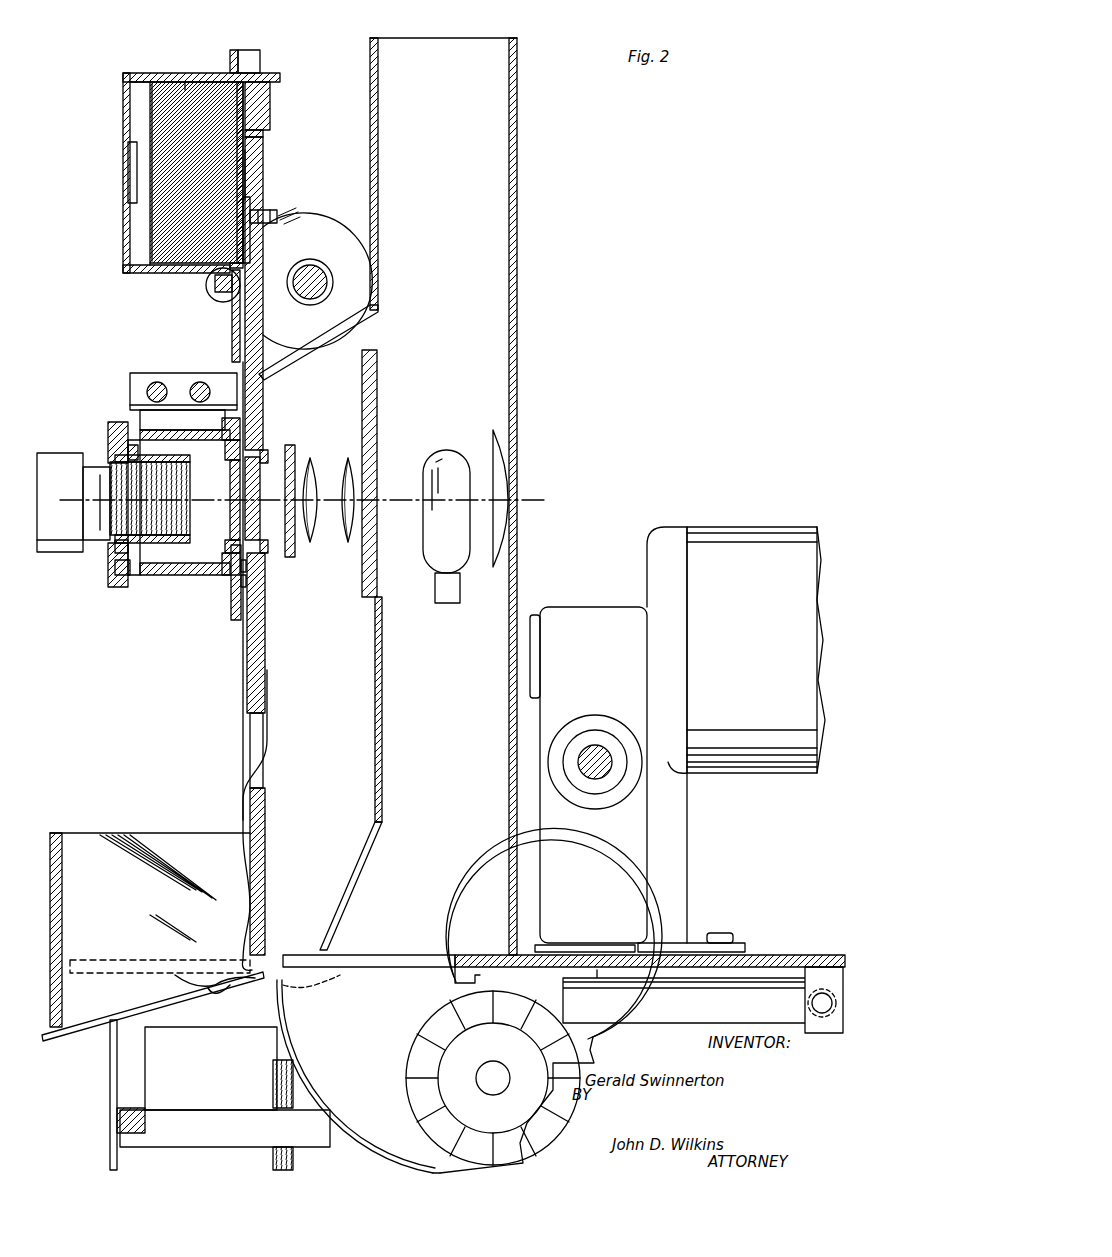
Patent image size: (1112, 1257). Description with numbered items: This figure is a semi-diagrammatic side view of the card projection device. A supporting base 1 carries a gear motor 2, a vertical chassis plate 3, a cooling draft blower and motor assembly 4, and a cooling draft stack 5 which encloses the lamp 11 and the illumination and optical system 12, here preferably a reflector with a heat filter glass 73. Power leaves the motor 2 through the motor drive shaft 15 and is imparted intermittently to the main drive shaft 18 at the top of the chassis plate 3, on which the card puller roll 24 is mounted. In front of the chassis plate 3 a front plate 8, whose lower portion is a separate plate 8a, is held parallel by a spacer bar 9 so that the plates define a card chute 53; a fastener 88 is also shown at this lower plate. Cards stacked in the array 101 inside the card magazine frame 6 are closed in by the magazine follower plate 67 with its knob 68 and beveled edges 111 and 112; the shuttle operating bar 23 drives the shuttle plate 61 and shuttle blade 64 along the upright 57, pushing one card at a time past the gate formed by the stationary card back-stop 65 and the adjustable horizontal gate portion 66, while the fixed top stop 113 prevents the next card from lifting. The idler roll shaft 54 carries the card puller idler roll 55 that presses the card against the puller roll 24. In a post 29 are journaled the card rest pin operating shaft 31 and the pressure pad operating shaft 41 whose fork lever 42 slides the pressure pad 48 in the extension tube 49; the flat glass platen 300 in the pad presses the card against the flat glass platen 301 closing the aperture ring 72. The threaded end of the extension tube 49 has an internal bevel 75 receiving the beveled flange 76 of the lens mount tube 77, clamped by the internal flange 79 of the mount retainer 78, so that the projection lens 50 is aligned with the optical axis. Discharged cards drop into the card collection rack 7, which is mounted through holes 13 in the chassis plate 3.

The supporting base 1 is at (768, 955).
The gear motor 2 is at (598, 607).
The vertical chassis plate 3 is at (263, 392).
The cooling draft blower and motor assembly 4 is at (330, 1106).
The cooling draft stack 5 is at (467, 81).
The card magazine frame 6 is at (197, 73).
The card collection rack 7 is at (90, 1030).
The front plate 8 is at (232, 325).
The separate lower plate 8a is at (241, 608).
The spacer bar 9 is at (243, 177).
The lamp 11 is at (452, 460).
The illumination and optical system 12 is at (310, 458).
The holes 13 is at (256, 728).
The motor drive shaft 15 is at (605, 772).
The main drive shaft 18 is at (323, 266).
The shuttle operating bar 23 is at (270, 104).
The card puller roll 24 is at (322, 213).
The post 29 is at (130, 375).
The card rest pin operating shaft 31 is at (200, 384).
The pressure pad operating shaft 41 is at (157, 384).
The pressure pad fork lever 42 is at (142, 432).
The pressure pad 48 is at (190, 575).
The extension tube 49 is at (172, 578).
The projection lens 50 is at (42, 453).
The card chute 53 is at (232, 343).
The idler roll shaft 54 is at (215, 285).
The card puller idler roll 55 is at (222, 302).
The upright 57 is at (255, 158).
The shuttle plate 61 is at (263, 134).
The shuttle blade 64 is at (272, 76).
The stationary card back-stop 65 is at (264, 210).
The adjustable horizontal gate portion 66 is at (250, 242).
The magazine follower plate 67 is at (130, 114).
The knob 68 is at (128, 152).
The aperture ring 72 is at (270, 553).
The heat filter glass 73 is at (348, 553).
The internal bevel 75 is at (108, 441).
The beveled flange 76 is at (112, 556).
The lens mount tube 77 is at (172, 541).
The mount retainer 78 is at (122, 575).
The internal flange 79 is at (108, 570).
The nut 88 is at (241, 598).
The card array 101 is at (198, 82).
The beveled edge 111 is at (150, 73).
The beveled edge 112 is at (150, 255).
The fixed top stop 113 is at (238, 50).
The flat glass platen 300 is at (230, 486).
The flat glass platen 301 is at (265, 462).